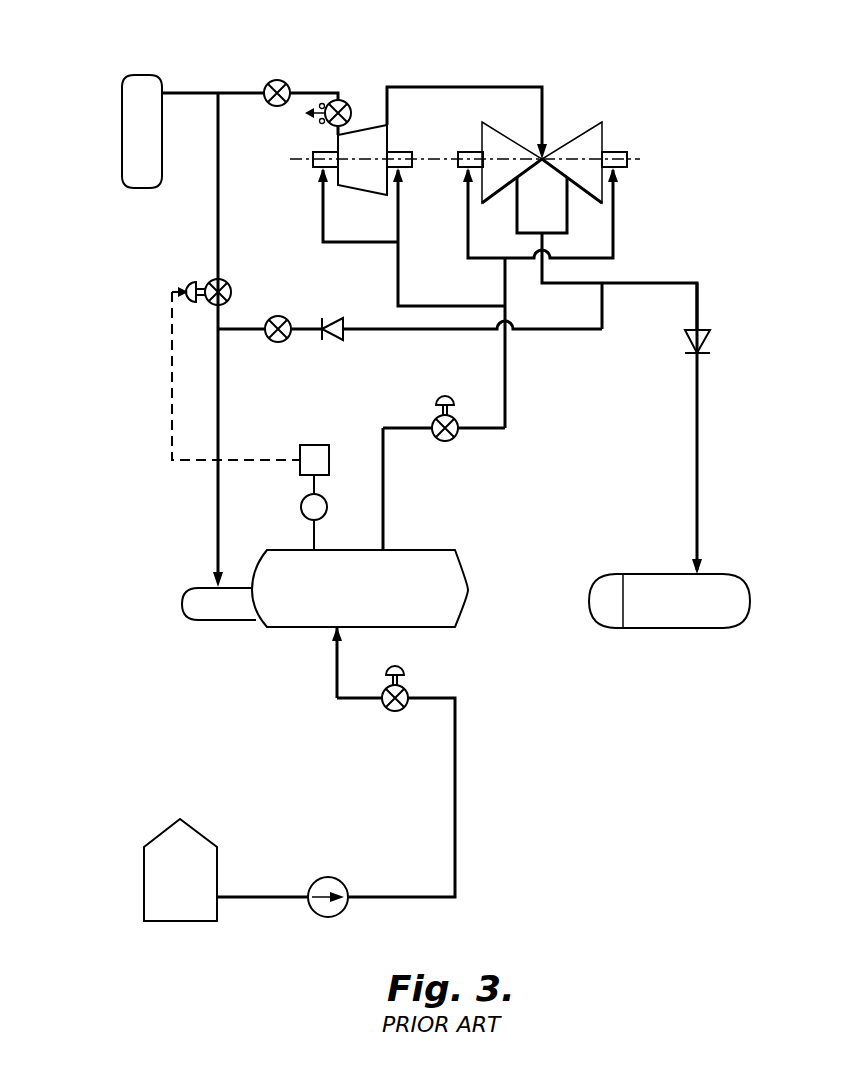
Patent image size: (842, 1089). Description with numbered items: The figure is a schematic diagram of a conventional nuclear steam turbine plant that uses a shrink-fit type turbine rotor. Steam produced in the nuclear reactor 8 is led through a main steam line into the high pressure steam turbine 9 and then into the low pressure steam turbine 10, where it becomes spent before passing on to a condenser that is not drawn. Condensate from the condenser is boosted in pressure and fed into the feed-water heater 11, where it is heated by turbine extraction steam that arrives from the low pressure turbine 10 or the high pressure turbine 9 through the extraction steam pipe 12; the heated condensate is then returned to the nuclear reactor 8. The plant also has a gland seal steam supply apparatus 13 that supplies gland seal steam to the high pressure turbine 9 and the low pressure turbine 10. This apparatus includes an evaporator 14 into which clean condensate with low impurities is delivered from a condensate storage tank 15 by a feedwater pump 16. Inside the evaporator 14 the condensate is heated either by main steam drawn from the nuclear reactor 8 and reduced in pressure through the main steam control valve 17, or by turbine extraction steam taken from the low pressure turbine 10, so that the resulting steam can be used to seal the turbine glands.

The nuclear reactor 8 is at (146, 189).
The high pressure steam turbine 9 is at (366, 127).
The low pressure steam turbine 10 is at (582, 133).
The feed-water heater 11 is at (713, 628).
The extraction steam pipe 12 is at (700, 305).
The gland seal steam supply apparatus 13 is at (446, 522).
The evaporator 14 is at (428, 628).
The condensate storage tank 15 is at (198, 835).
The feedwater pump 16 is at (325, 877).
The main steam control valve 17 is at (232, 291).